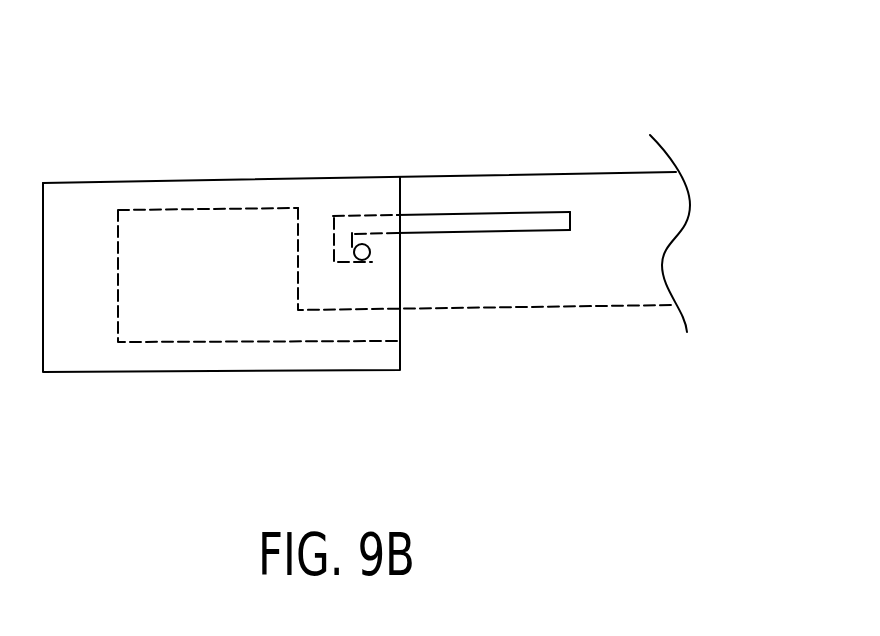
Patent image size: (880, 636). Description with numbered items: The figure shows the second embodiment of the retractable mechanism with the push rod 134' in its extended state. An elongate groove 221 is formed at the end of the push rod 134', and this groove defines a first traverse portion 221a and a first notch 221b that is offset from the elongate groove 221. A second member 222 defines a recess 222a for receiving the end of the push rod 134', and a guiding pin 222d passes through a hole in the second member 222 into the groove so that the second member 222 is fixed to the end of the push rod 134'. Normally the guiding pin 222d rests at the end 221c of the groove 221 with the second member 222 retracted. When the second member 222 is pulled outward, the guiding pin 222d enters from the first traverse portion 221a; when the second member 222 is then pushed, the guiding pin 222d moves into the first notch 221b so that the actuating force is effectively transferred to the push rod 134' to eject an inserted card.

The push rod 134' is at (425, 233).
The second member 222 is at (80, 213).
The recess 222a is at (237, 323).
The guiding pin 222d is at (362, 250).
The elongate groove 221 is at (508, 220).
The first traverse portion 221a is at (333, 233).
The first notch 221b is at (371, 249).
The end of the groove 221c is at (571, 232).